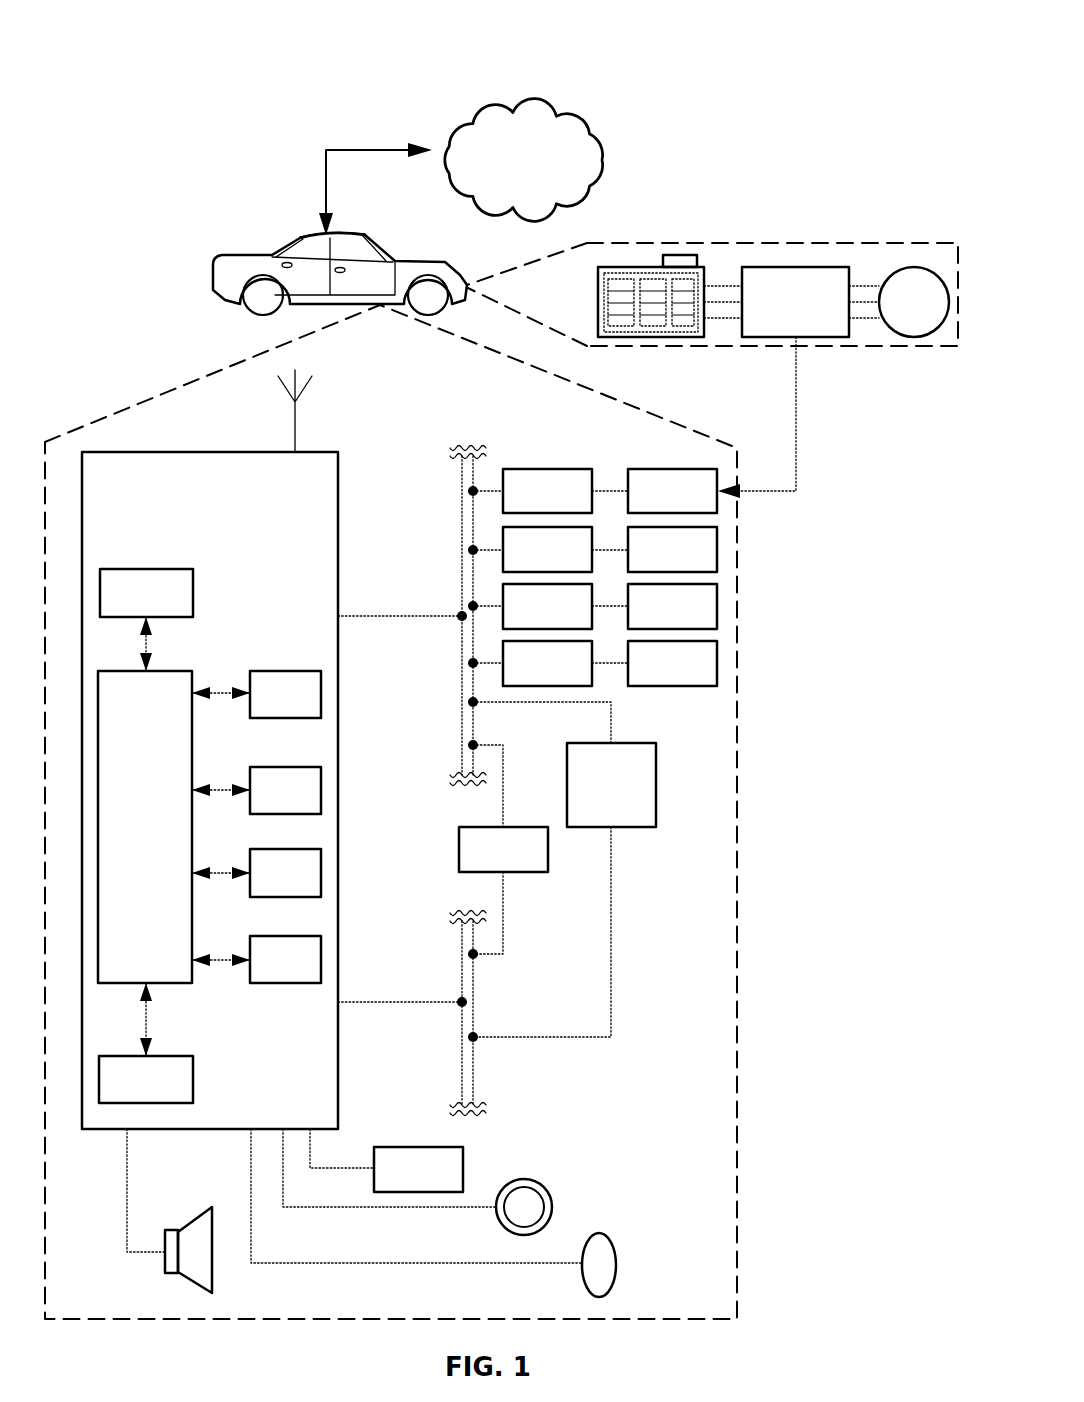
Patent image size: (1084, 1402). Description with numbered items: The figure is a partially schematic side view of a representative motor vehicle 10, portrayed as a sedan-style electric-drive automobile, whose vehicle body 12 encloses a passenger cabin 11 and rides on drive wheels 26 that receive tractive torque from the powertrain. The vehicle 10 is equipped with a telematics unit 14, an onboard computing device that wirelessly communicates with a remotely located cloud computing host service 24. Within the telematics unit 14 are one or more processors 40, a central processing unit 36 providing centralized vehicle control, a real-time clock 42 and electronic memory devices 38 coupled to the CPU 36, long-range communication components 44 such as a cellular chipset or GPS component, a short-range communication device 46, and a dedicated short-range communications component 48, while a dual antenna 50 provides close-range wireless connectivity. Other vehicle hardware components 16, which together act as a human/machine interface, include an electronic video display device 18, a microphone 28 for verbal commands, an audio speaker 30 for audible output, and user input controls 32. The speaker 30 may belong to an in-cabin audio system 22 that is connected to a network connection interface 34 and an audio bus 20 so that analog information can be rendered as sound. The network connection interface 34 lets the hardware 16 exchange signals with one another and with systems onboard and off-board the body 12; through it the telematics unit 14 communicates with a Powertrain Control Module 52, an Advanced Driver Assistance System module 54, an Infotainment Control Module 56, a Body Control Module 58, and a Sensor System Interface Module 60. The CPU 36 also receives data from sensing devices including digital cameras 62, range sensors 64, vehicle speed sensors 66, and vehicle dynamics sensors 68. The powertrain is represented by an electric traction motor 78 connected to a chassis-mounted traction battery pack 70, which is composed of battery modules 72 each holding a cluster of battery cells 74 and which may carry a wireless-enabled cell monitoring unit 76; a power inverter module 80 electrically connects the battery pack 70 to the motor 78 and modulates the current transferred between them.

The motor vehicle 10 is at (188, 58).
The passenger cabin 11 is at (305, 232).
The vehicle body 12 is at (248, 252).
The telematics unit 14 is at (338, 657).
The vehicle hardware components 16 is at (197, 382).
The electronic video display device 18 is at (386, 1160).
The audio bus 20 is at (462, 1047).
The in-cabin audio system 22 is at (564, 869).
The cloud computing host service 24 is at (461, 167).
The drive wheels 26 is at (255, 310).
The microphone 28 is at (616, 1243).
The audio speaker 30 is at (192, 1289).
The user input controls 32 is at (553, 1200).
The network connection interface 34 is at (462, 690).
The central processing unit 36 is at (145, 827).
The electronic memory devices 38 is at (146, 1043).
The processors 40 is at (146, 620).
The real-time clock 42 is at (256, 694).
The long-range communication components 44 is at (256, 790).
The short-range communication device 46 is at (256, 873).
The dedicated short-range communications component 48 is at (256, 959).
The dual antenna 50 is at (297, 427).
The Powertrain Control Module 52 is at (565, 491).
The Advanced Driver Assistance System module 54 is at (672, 491).
The Infotainment Control Module 56 is at (503, 849).
The Body Control Module 58 is at (565, 549).
The Sensor System Interface Module 60 is at (672, 549).
The digital cameras 62 is at (565, 606).
The range sensors 64 is at (672, 606).
The vehicle speed sensors 66 is at (565, 663).
The vehicle dynamics sensors 68 is at (672, 663).
The traction battery pack 70 is at (680, 338).
The battery modules 72 is at (618, 270).
The battery cells 74 is at (612, 290).
The cell monitoring unit 76 is at (681, 255).
The electric traction motor 78 is at (899, 268).
The power inverter module 80 is at (756, 267).